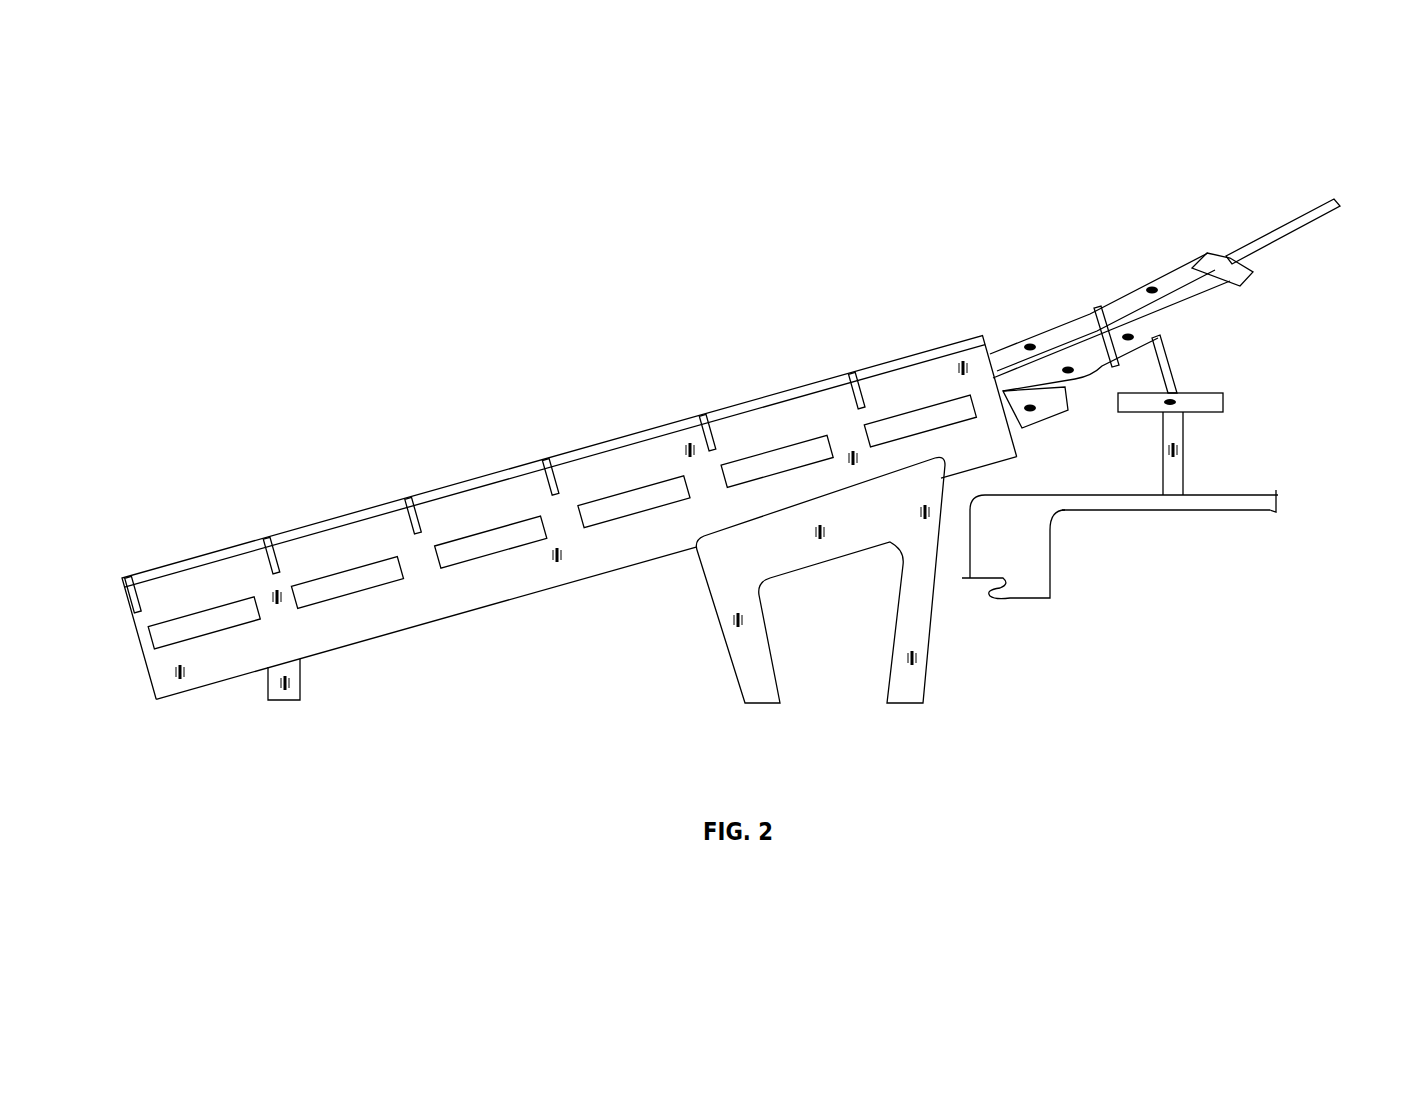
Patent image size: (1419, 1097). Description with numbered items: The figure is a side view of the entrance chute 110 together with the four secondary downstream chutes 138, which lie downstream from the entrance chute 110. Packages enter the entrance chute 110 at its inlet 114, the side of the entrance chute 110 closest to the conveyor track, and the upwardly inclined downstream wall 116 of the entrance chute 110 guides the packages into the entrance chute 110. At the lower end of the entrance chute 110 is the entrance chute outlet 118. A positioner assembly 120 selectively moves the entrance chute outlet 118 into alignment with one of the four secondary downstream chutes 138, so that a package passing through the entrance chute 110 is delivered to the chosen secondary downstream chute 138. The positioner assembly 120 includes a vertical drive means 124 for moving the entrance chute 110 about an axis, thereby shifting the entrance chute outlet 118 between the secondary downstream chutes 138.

The entrance chute 110 is at (1062, 327).
The upwardly inclined downstream wall 116 is at (1130, 296).
The inlet 114 is at (1240, 268).
The positioner assembly 120 is at (1172, 330).
The vertical drive means 124 is at (1178, 377).
The entrance chute outlet 118 is at (1013, 427).
The secondary downstream chutes 138 is at (615, 512).